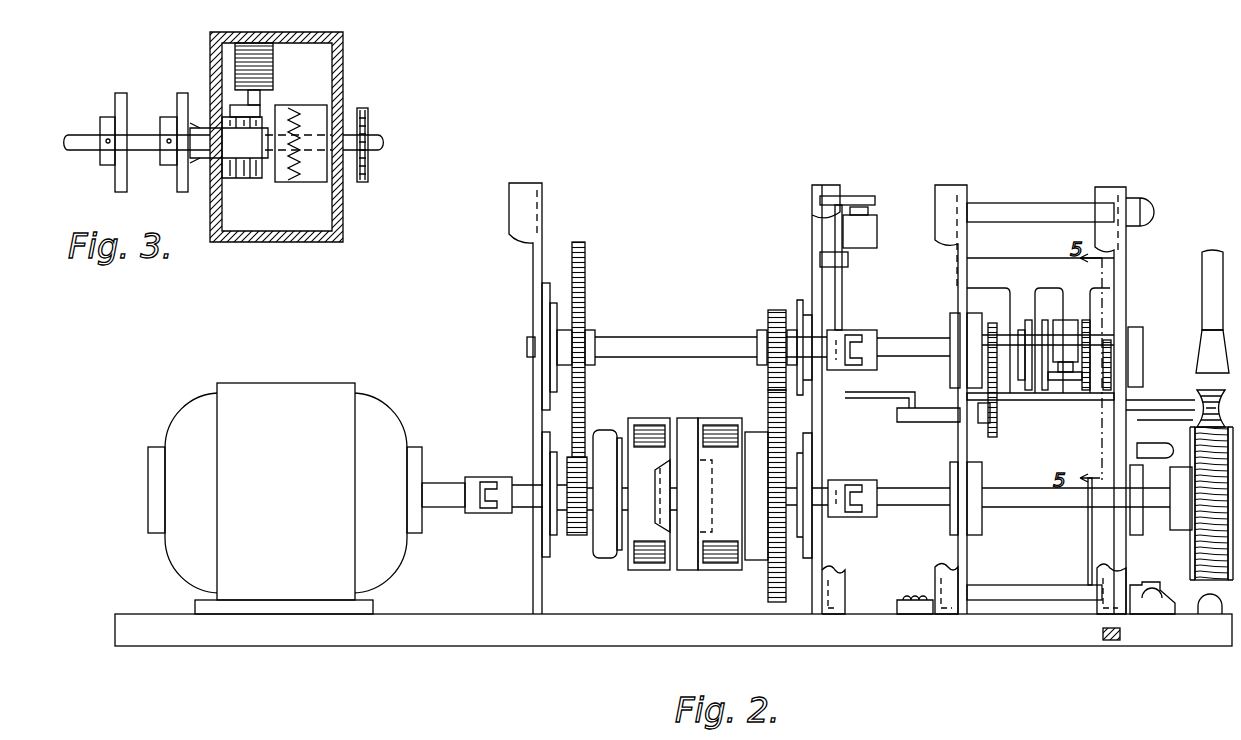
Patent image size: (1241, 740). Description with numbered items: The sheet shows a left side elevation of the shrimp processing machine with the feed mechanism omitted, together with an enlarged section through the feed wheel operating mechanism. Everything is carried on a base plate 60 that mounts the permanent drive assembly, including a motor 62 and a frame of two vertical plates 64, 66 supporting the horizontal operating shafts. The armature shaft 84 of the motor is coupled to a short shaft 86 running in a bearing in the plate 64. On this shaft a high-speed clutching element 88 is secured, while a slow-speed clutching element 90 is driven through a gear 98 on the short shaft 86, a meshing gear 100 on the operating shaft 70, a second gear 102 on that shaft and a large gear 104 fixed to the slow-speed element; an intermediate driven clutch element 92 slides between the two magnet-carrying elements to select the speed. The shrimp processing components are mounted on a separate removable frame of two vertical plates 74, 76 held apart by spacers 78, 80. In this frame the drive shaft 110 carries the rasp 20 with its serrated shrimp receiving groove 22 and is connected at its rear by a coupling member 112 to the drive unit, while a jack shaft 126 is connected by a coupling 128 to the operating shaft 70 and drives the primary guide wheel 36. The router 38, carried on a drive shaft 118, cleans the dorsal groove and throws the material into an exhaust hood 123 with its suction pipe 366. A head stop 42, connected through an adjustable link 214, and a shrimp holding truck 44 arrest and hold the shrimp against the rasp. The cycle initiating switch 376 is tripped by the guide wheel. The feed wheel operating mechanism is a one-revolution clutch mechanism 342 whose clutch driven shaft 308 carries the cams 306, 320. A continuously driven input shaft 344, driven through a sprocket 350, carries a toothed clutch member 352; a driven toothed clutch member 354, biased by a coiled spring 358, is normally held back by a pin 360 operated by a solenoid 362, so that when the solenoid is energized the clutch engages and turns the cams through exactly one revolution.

In FIG. 2, the rotary shrimp transfer member or rasp 20 is at (1196, 532).
In FIG. 2, the serrated annular shrimp receiving groove 22 is at (1200, 562).
In FIG. 2, the primary guide wheel 36 is at (1192, 432).
In FIG. 2, the router 38 is at (1206, 396).
In FIG. 2, the head stop 42 is at (1204, 606).
In FIG. 2, the shrimp holding truck 44 is at (746, 558).
In FIG. 2, the base plate 60 is at (390, 648).
In FIG. 2, the motor 62 is at (351, 380).
In FIG. 2, the vertical plate 64 is at (546, 176).
In FIG. 2, the vertical plate 66 is at (848, 176).
In FIG. 2, the operating shaft 70 is at (684, 334).
In FIG. 2, the vertical plate 74 is at (966, 176).
In FIG. 2, the vertical plate 76 is at (1128, 176).
In FIG. 2, the spacer 78 is at (1040, 193).
In FIG. 2, the spacer 80 is at (1040, 580).
In FIG. 2, the armature shaft 84 is at (450, 483).
In FIG. 2, the short shaft 86 is at (520, 470).
In FIG. 2, the high-speed clutching element 88 is at (659, 414).
In FIG. 2, the slow-speed clutching element 90 is at (744, 414).
In FIG. 2, the intermediate driven clutch element 92 is at (697, 414).
In FIG. 2, the gear 98 is at (583, 537).
In FIG. 2, the gear 100 is at (598, 230).
In FIG. 2, the second gear 102 is at (784, 304).
In FIG. 2, the large gear 104 is at (776, 584).
In FIG. 2, the drive shaft 110 is at (1034, 508).
In FIG. 2, the coupling member 112 is at (872, 469).
In FIG. 2, the drive shaft 118 is at (1170, 378).
In FIG. 2, the exhaust hood 123 is at (1199, 362).
In FIG. 2, the jack shaft 126 is at (926, 332).
In FIG. 2, the coupling 128 is at (875, 316).
In FIG. 2, the adjustable link 214 is at (1088, 547).
In FIG. 3, the cam 306 is at (121, 93).
In FIG. 2, the cam 306 is at (1027, 320).
In FIG. 3, the clutch driven shaft 308 is at (80, 118).
In FIG. 3, the cam 320 is at (184, 93).
In FIG. 2, the cam 320 is at (1046, 320).
In FIG. 3, the one-revolution clutch mechanism 342 is at (357, 53).
In FIG. 2, the one-revolution clutch mechanism 342 is at (1070, 322).
In FIG. 3, the input shaft 344 is at (384, 144).
In FIG. 3, the sprocket 350 is at (366, 108).
In FIG. 3, the toothed clutch member 352 is at (318, 183).
In FIG. 3, the driven toothed clutch member 354 is at (283, 184).
In FIG. 3, the coiled spring 358 is at (236, 180).
In FIG. 3, the pin 360 is at (258, 110).
In FIG. 3, the solenoid 362 is at (256, 60).
In FIG. 2, the suction pipe 366 is at (1203, 276).
In FIG. 2, the cycle initiating switch 376 is at (866, 240).